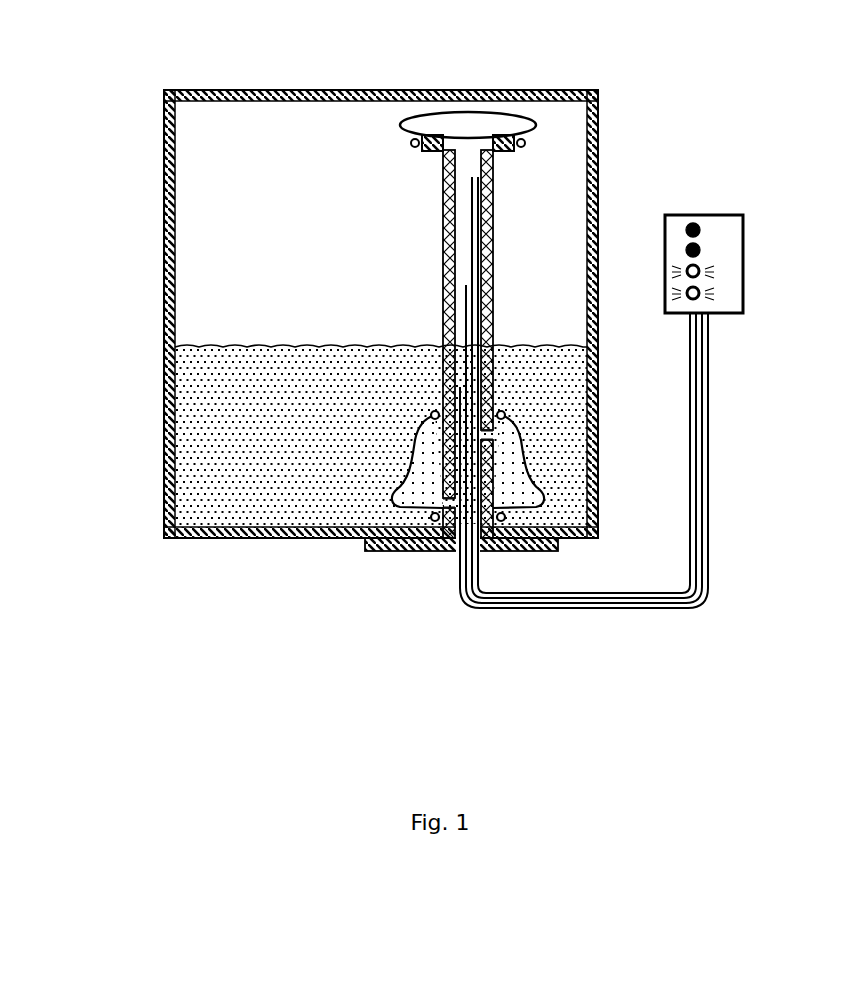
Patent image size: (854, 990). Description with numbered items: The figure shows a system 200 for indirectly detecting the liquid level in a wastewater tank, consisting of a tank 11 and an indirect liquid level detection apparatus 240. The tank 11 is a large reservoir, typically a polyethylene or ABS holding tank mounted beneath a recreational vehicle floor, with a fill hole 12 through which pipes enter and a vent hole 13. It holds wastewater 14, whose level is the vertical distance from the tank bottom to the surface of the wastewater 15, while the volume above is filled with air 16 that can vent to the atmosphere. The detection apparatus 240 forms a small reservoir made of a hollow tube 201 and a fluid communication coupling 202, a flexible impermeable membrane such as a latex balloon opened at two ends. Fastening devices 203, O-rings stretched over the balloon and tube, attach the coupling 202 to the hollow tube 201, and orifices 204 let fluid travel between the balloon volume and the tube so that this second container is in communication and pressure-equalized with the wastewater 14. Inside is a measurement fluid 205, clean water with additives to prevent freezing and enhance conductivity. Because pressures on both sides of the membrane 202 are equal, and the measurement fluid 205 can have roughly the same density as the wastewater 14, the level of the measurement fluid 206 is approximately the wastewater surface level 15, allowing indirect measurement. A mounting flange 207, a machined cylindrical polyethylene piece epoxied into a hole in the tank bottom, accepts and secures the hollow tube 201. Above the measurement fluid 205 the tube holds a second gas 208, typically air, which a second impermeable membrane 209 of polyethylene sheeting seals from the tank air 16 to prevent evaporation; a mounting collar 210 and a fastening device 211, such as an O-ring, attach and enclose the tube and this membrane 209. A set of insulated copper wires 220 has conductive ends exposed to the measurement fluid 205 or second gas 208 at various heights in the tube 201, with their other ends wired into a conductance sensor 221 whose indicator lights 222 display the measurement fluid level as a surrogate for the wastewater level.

The tank 11 is at (345, 273).
The fill hole 12 is at (210, 92).
The vent hole 13 is at (578, 90).
The wastewater 14 is at (210, 396).
The surface of the wastewater 15 is at (217, 347).
The air 16 is at (213, 248).
The system 200 is at (700, 76).
The hollow tube 201 is at (443, 280).
The fluid communication coupling 202 is at (392, 493).
The fastening devices 203 is at (430, 415).
The orifices 204 is at (390, 488).
The measurement fluid 205 is at (432, 455).
The level of the measurement fluid 206 is at (443, 327).
The mounting flange 207 is at (387, 553).
The second gas 208 is at (463, 247).
The second impermeable membrane 209 is at (468, 113).
The mounting collar 210 is at (433, 153).
The fastening device 211 is at (530, 146).
The insulated copper wires 220 is at (540, 608).
The conductance sensor 221 is at (672, 215).
The indicator lights 222 is at (706, 236).
The indirect liquid level detection apparatus 240 is at (504, 222).